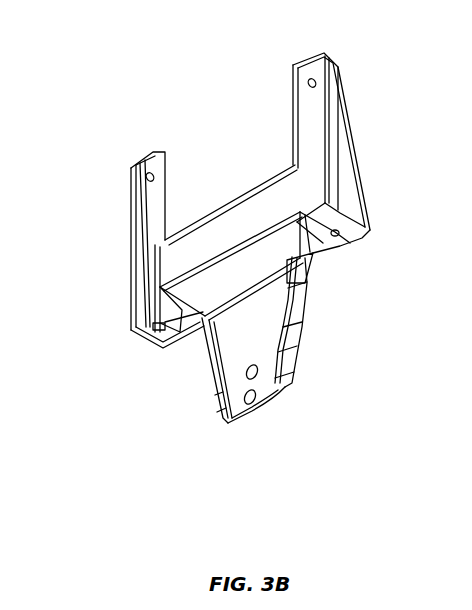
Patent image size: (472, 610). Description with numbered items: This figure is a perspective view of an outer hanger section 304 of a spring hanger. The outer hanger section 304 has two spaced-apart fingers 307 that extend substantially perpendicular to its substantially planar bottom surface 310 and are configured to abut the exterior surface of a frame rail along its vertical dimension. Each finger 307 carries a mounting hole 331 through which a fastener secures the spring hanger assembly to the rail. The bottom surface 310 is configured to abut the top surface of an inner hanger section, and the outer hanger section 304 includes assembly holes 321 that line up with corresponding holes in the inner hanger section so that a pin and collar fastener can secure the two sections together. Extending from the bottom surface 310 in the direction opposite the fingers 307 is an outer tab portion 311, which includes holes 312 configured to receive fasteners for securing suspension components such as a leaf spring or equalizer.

The outer hanger section 304 is at (327, 368).
The finger 307 is at (137, 160).
The mounting hole 331 is at (155, 176).
The assembly hole 321 is at (163, 323).
The bottom surface 310 is at (204, 340).
The hole 312 is at (250, 417).
The outer tab portion 311 is at (225, 430).